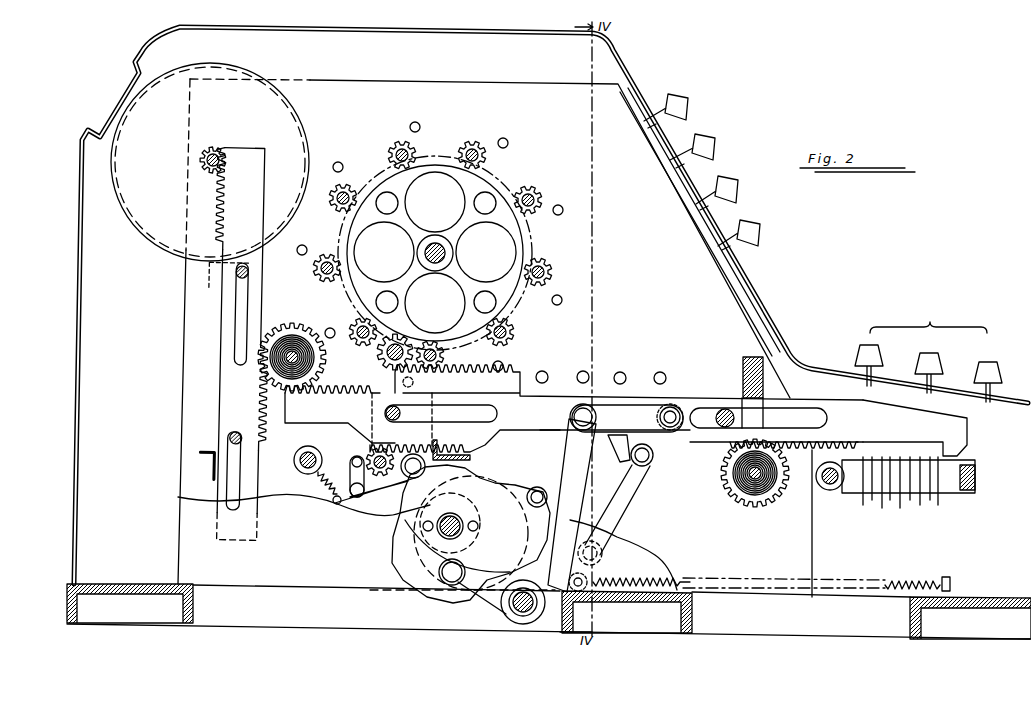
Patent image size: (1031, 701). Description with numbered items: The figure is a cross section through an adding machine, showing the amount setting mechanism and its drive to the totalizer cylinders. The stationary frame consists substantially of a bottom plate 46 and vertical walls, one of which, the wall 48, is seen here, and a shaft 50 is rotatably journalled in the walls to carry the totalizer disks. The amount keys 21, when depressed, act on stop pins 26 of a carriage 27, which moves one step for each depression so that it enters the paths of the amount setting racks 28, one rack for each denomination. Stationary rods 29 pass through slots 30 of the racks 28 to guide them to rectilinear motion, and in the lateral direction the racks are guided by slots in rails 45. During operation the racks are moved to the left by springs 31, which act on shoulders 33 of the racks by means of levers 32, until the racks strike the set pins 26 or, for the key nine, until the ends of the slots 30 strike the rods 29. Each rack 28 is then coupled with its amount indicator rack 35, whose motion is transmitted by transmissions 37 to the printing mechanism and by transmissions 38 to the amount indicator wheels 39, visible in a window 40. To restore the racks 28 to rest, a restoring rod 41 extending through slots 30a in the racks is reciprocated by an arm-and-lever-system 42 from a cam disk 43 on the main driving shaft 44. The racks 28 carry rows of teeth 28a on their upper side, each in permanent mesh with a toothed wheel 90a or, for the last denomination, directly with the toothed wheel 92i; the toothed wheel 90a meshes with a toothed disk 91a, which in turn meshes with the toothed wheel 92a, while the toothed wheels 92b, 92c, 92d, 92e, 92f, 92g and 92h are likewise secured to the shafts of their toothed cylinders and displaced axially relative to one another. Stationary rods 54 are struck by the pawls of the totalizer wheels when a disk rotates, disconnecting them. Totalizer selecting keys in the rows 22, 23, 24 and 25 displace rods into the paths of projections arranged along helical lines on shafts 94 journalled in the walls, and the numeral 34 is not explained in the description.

The amount keys 21 is at (928, 354).
The totalizer selecting key row 22 is at (760, 229).
The totalizer selecting key row 23 is at (737, 184).
The totalizer selecting key row 24 is at (714, 141).
The totalizer selecting key row 25 is at (688, 101).
The stop pins 26 is at (889, 505).
The carriage 27 is at (968, 495).
The amount setting racks 28 is at (996, 421).
The rows of teeth 28a is at (503, 365).
The stationary rods 29 is at (396, 421).
The slots 30 is at (492, 420).
The slots 30a is at (706, 433).
The springs 31 is at (905, 580).
The levers 32 is at (640, 492).
The shoulders 33 is at (618, 450).
The support 34 is at (818, 397).
The amount indicator rack 35 is at (313, 423).
The transmissions 37 is at (742, 500).
The transmissions 38 is at (222, 172).
The amount indicator wheels 39 is at (305, 118).
The window 40 is at (127, 96).
The restoring rod 41 is at (670, 406).
The arm-and-lever-system 42 is at (470, 610).
The cam disk 43 is at (402, 562).
The main driving shaft 44 is at (440, 528).
The rails 45 is at (470, 458).
The bottom plate 46 is at (150, 584).
The vertical wall 48 is at (377, 80).
The shaft 50 is at (445, 254).
The stationary rods 54 is at (507, 141).
The toothed wheel 90a is at (386, 365).
The toothed disk 91a is at (517, 320).
The toothed wheel 92a is at (515, 337).
The toothed wheel 92b is at (544, 263).
The toothed wheel 92c is at (537, 194).
The toothed wheel 92d is at (472, 142).
The toothed wheel 92e is at (395, 146).
The toothed wheel 92f is at (358, 180).
The toothed wheel 92g is at (326, 256).
The toothed wheel 92h is at (360, 323).
The toothed wheel 92i is at (446, 356).
The shafts 94 is at (583, 371).